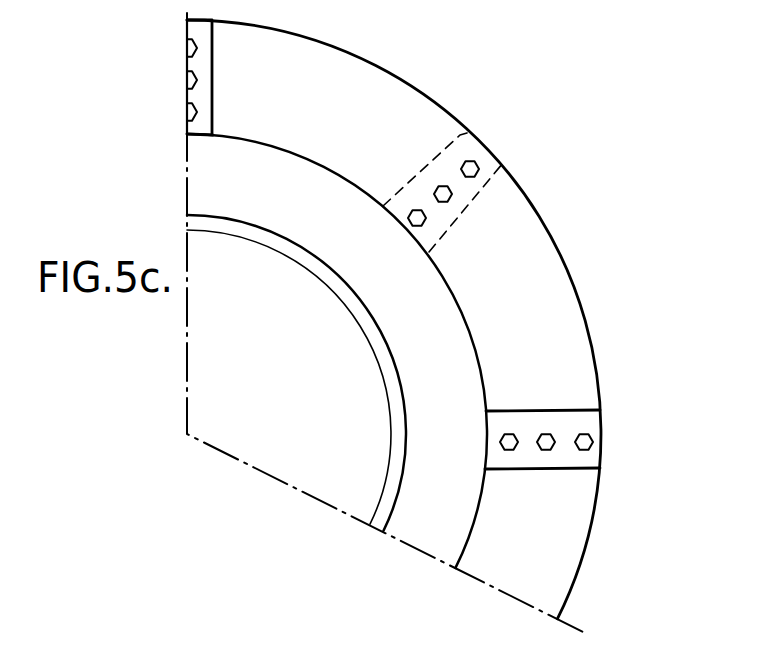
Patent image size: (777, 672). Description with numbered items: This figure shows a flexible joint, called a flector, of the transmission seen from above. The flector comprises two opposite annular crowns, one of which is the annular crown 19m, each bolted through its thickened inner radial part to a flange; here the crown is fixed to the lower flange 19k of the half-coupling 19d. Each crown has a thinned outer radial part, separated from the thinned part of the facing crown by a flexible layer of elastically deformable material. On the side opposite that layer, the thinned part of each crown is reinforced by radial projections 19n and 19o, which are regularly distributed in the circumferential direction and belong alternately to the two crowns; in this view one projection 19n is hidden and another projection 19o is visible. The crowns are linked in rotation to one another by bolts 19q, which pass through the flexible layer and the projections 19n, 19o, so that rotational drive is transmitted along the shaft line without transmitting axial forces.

The half-coupling 19d is at (360, 328).
The lower flange 19k is at (453, 355).
The annular crown 19m is at (515, 238).
The radial projection 19n is at (470, 132).
The radial projection 19o is at (567, 420).
The bolts 19q is at (452, 193).